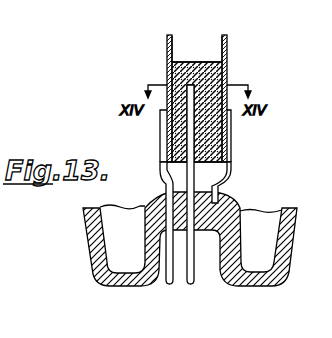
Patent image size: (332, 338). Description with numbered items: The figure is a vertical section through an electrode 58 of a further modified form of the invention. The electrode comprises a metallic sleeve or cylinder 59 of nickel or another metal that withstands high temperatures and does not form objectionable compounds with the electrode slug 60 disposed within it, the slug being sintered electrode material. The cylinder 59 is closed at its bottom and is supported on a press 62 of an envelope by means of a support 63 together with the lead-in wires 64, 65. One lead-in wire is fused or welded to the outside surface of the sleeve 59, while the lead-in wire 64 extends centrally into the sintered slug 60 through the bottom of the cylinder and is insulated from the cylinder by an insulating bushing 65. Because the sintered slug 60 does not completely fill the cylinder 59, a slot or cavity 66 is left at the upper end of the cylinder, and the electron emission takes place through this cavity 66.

The electrode 58 is at (259, 76).
The metallic sleeve or cylinder 59 is at (228, 44).
The electrode slug 60 is at (167, 62).
The press 62 is at (234, 201).
The support 63 is at (162, 173).
The lead-in wire 64 is at (187, 186).
The insulating bushing 65 is at (229, 172).
The slot or cavity 66 is at (208, 45).